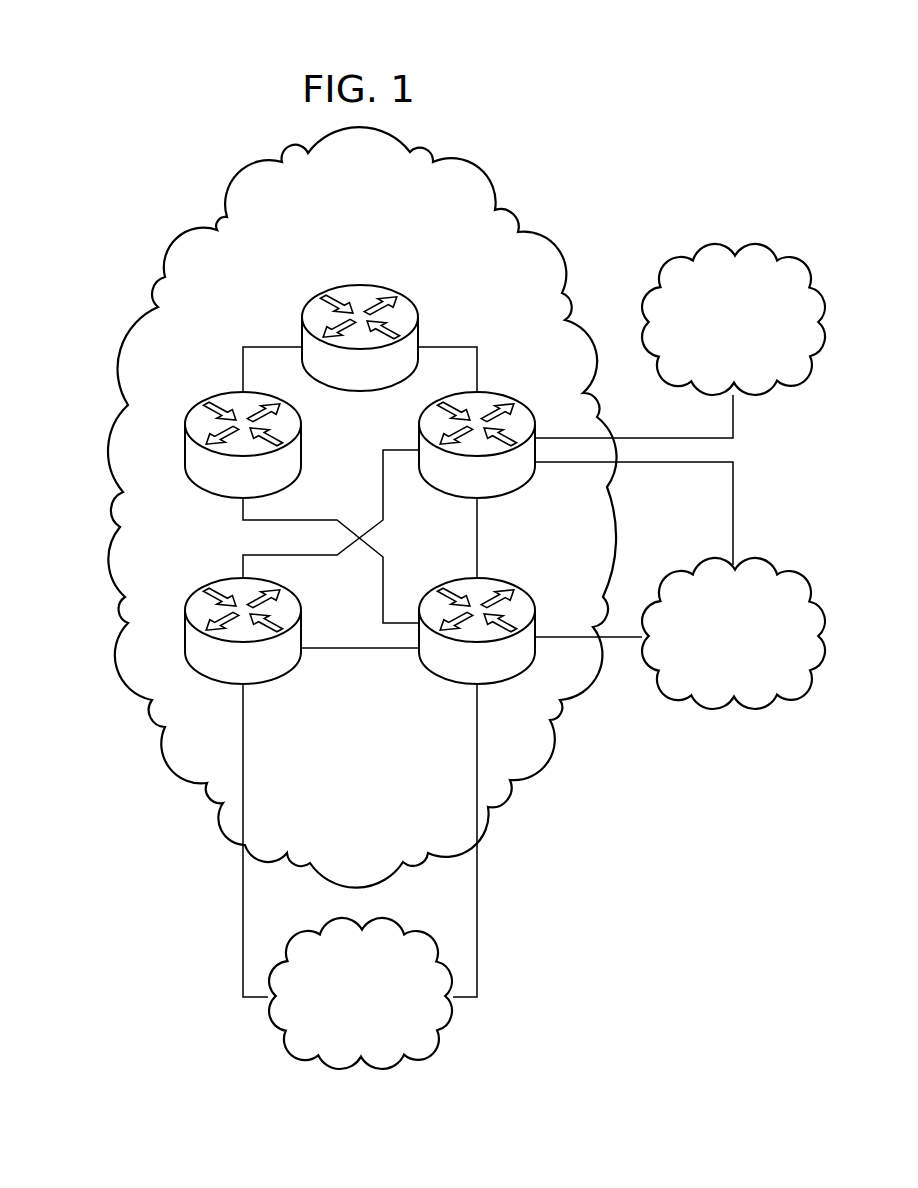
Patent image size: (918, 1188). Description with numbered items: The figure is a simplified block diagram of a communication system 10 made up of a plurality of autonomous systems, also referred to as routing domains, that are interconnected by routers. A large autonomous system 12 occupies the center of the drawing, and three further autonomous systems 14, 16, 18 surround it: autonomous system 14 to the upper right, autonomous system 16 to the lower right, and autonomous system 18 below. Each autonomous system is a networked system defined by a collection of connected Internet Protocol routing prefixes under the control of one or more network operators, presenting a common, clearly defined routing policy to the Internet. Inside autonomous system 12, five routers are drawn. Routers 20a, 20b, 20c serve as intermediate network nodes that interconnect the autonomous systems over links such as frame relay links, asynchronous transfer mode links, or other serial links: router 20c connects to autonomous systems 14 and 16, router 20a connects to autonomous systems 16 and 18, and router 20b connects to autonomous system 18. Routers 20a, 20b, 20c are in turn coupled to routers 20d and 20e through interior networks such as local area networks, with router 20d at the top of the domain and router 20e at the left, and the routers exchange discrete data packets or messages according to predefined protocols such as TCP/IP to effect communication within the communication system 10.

The communication system 10 is at (610, 166).
The autonomous system 12 is at (100, 446).
The autonomous system 14 is at (757, 252).
The autonomous system 16 is at (753, 708).
The autonomous system 18 is at (333, 1070).
The router 20a is at (500, 685).
The router 20b is at (222, 685).
The router 20c is at (497, 392).
The router 20d is at (318, 300).
The router 20e is at (236, 392).